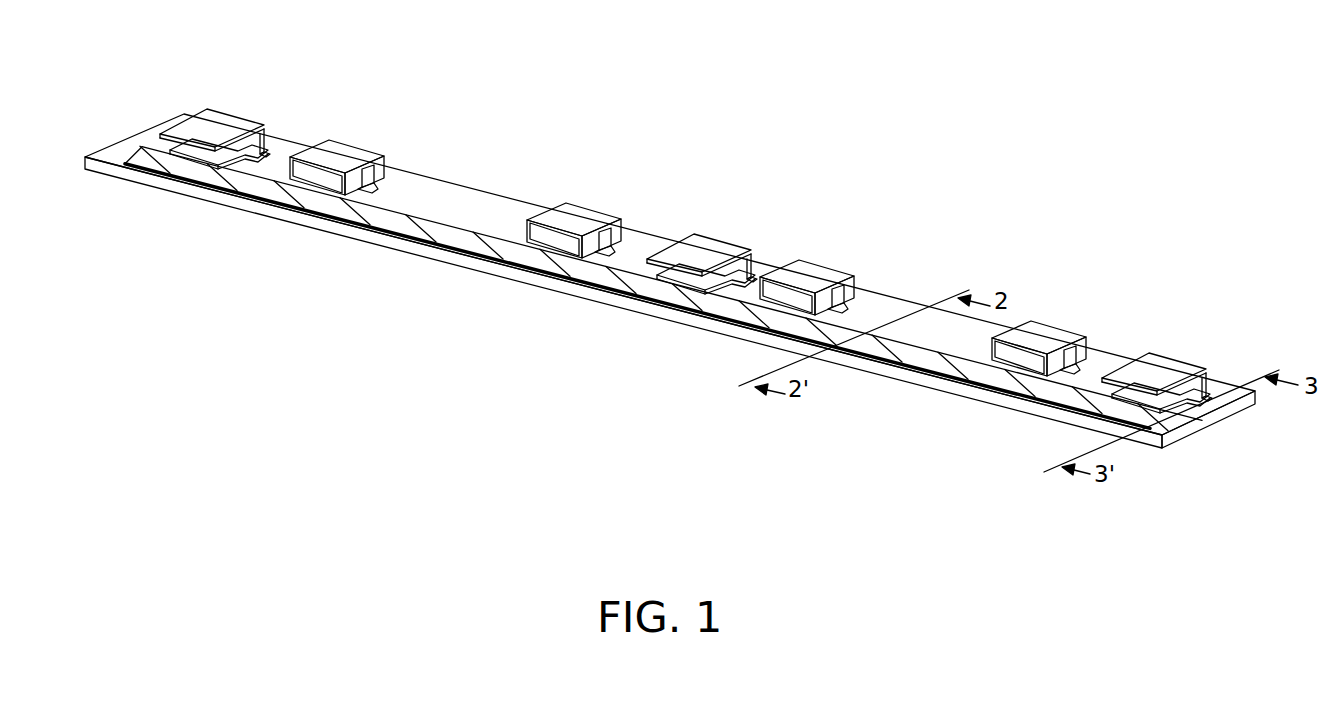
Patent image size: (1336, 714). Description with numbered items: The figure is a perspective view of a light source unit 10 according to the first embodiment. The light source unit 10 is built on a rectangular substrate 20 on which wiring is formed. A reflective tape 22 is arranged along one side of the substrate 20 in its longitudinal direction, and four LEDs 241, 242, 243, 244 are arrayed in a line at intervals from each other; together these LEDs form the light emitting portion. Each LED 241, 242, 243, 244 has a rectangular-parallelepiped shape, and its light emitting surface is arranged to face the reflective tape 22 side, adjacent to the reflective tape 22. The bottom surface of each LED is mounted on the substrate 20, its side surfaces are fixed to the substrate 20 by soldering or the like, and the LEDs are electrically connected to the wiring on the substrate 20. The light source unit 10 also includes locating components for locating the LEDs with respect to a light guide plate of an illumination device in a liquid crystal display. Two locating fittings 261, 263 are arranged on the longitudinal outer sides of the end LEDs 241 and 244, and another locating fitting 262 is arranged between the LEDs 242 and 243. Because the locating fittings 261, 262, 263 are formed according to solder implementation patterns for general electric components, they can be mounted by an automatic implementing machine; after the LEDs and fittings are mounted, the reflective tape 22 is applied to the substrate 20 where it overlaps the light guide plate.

The light source unit 10 is at (670, 297).
The substrate 20 is at (1208, 432).
The reflective tape 22 is at (662, 290).
The LED 241 is at (346, 140).
The LED 242 is at (584, 205).
The LED 243 is at (818, 263).
The LED 244 is at (1054, 325).
The locating fitting 261 is at (233, 114).
The locating fitting 262 is at (716, 238).
The locating fitting 263 is at (1172, 357).